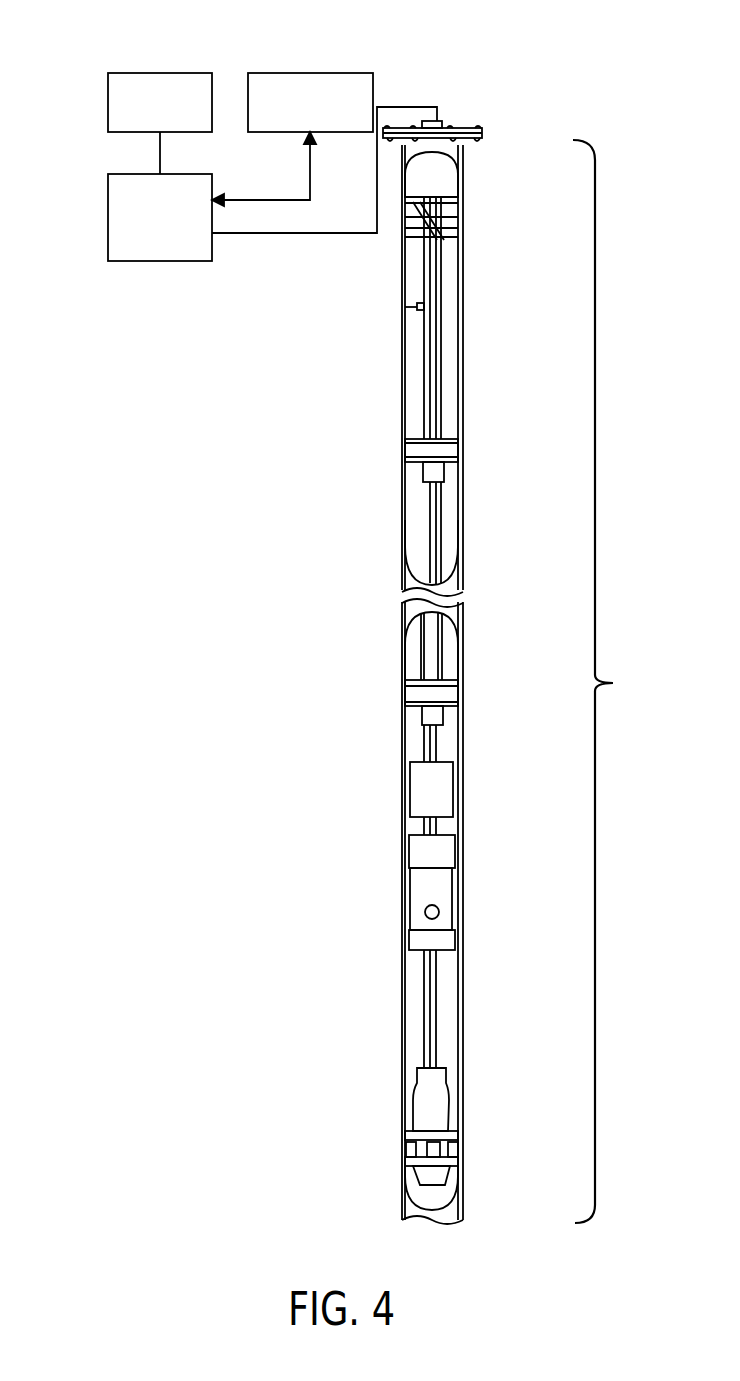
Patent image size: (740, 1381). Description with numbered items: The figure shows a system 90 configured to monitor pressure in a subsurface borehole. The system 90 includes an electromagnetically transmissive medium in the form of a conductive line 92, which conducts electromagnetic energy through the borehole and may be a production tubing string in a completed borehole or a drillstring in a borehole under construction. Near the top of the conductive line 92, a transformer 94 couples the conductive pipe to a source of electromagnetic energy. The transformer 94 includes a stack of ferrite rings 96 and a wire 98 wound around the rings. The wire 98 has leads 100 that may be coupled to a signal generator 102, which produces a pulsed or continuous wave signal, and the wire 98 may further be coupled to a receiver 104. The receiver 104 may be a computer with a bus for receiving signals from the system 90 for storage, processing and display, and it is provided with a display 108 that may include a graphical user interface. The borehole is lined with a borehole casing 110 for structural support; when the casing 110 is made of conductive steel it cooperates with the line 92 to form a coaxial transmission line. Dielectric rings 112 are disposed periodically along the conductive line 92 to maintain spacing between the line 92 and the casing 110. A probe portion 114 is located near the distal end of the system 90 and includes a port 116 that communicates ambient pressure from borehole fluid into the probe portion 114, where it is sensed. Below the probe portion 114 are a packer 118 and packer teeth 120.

The system 90 is at (606, 681).
The conductive line 92 is at (424, 288).
The transformer 94 is at (440, 675).
The ferrite rings 96 is at (452, 211).
The wire 98 is at (420, 231).
The leads 100 is at (437, 107).
The signal generator 102 is at (310, 73).
The receiver 104 is at (108, 215).
The display 108 is at (108, 105).
The borehole casing 110 is at (465, 165).
The dielectric rings 112 is at (411, 449).
The probe portion 114 is at (447, 898).
The port 116 is at (425, 912).
The packer 118 is at (455, 1140).
The packer teeth 120 is at (440, 1155).